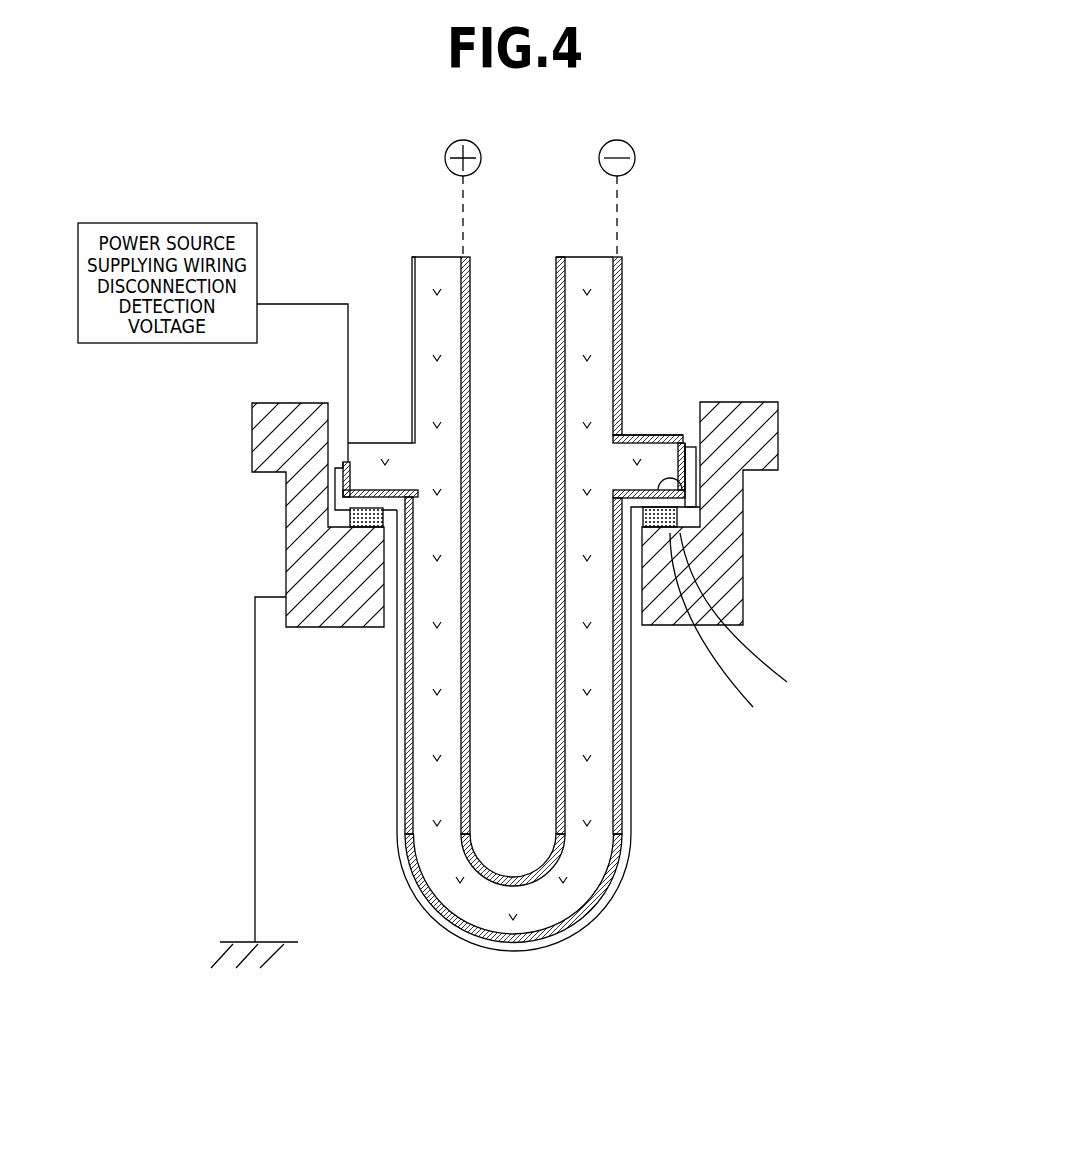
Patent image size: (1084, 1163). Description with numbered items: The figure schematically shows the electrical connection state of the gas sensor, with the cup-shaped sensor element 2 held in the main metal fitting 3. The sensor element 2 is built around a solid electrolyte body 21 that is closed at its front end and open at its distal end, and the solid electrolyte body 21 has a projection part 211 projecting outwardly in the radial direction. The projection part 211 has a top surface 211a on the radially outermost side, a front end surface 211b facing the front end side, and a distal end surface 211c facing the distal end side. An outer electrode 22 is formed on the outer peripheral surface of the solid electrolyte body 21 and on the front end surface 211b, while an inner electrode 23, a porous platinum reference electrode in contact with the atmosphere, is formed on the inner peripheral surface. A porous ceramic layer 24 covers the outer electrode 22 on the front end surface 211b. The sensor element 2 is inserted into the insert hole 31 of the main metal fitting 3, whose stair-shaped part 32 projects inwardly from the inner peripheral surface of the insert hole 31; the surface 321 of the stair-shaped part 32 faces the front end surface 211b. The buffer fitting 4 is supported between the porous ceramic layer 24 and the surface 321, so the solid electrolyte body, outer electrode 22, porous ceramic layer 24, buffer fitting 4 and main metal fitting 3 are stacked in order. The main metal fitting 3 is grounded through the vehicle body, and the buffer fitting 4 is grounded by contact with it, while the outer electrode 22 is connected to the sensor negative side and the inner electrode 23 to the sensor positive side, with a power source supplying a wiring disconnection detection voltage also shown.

The sensor element 2 is at (358, 203).
The solid electrolyte body 21 is at (598, 320).
The projection part 211 is at (689, 444).
The top surface 211a is at (688, 462).
The front end surface 211b is at (683, 480).
The distal end surface 211c is at (645, 435).
The outer electrode 22 is at (620, 877).
The inner electrode 23 is at (557, 295).
The porous ceramic layer 24 is at (632, 775).
The main metal fitting 3 is at (727, 523).
The insert hole 31 is at (693, 426).
The stair-shaped part 32 is at (729, 635).
The surface of the stair-shaped part 321 is at (762, 618).
The buffer fitting 4 is at (349, 516).